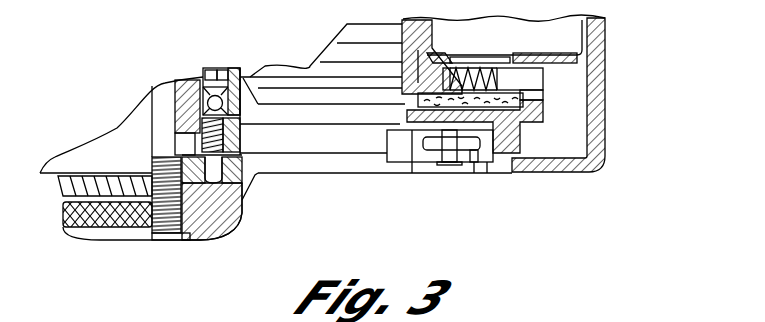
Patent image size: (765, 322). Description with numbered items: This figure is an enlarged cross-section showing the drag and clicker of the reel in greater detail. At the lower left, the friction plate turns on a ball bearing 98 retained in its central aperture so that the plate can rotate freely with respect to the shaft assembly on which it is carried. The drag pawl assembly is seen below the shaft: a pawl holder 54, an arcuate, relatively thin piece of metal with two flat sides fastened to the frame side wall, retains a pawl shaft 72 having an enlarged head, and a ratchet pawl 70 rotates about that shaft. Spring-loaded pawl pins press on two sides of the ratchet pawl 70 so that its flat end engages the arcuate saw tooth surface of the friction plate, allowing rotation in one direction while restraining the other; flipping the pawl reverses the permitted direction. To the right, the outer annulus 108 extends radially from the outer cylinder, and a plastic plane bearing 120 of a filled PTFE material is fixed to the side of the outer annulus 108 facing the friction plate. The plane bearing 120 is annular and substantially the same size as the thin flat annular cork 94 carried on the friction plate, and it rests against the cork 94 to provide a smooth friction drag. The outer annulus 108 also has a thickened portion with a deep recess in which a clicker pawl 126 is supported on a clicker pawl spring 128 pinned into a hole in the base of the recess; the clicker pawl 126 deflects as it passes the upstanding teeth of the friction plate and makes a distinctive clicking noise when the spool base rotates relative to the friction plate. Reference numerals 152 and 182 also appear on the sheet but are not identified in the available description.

The pawl holder 54 is at (397, 147).
The ratchet pawl 70 is at (473, 158).
The pawl shaft 72 is at (447, 164).
The annular cork 94 is at (546, 96).
The ball bearing 98 is at (212, 71).
The outer annulus 108 is at (400, 97).
The plane bearing 120 is at (546, 82).
The clicker pawl 126 is at (580, 67).
The clicker pawl spring 128 is at (472, 68).
The handle 152 is at (224, 311).
The grip 182 is at (83, 318).